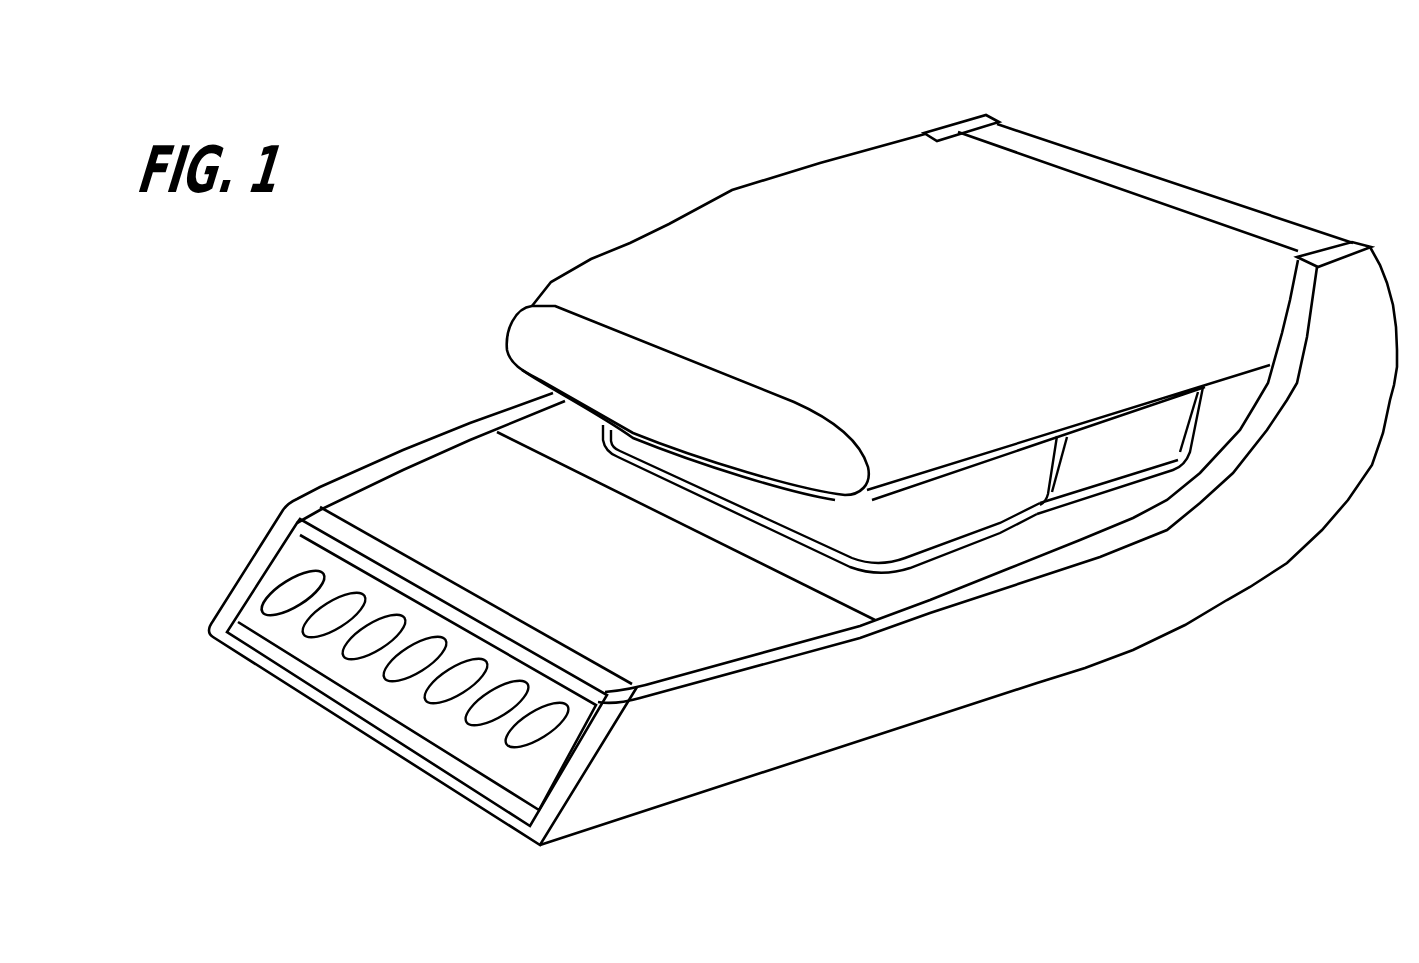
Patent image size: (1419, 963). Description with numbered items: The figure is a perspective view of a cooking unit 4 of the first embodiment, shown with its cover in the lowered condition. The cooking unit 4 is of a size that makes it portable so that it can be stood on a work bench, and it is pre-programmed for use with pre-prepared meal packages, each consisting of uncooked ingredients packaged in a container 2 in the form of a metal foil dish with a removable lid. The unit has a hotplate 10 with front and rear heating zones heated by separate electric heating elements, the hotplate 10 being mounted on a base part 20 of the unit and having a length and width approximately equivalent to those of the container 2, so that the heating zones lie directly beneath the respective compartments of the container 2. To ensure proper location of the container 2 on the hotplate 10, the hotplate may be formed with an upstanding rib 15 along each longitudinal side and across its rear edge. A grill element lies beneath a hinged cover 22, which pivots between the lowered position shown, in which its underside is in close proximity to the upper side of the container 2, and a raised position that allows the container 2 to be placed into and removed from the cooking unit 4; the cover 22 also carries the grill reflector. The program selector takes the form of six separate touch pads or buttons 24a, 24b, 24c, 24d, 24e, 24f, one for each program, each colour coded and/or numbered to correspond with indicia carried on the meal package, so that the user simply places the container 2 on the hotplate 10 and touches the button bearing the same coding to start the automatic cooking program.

The container 2 is at (858, 523).
The cooking unit 4 is at (797, 82).
The hotplate 10 is at (700, 505).
The upstanding rib 15 is at (1023, 530).
The base part 20 is at (490, 483).
The hinged cover 22 is at (911, 305).
The touch pad or button 24a is at (313, 623).
The touch pad or button 24b is at (343, 648).
The touch pad or button 24c is at (390, 670).
The touch pad or button 24d is at (433, 693).
The touch pad or button 24e is at (480, 720).
The touch pad or button 24f is at (520, 737).